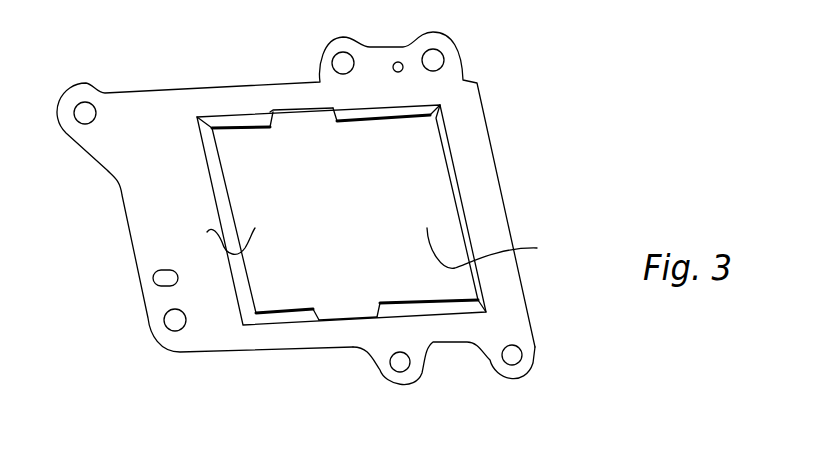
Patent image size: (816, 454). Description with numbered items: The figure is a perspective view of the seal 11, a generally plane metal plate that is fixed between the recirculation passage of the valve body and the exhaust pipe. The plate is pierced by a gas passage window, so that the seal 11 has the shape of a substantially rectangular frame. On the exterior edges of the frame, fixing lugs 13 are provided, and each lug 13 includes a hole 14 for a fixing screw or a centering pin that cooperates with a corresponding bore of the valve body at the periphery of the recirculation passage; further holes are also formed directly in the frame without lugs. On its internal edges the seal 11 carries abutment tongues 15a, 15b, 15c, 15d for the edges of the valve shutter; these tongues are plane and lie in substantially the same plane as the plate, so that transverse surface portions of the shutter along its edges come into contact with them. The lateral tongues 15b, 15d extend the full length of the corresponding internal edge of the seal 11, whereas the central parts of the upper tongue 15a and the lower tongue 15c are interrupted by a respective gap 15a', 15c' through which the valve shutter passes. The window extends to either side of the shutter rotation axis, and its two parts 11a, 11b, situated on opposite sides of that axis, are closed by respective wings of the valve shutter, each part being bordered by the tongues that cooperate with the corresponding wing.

The seal 11 is at (190, 288).
The part of the window 11a is at (208, 235).
The part of the window 11b is at (504, 248).
The fixing lug 13 is at (408, 382).
The hole 14 is at (422, 373).
The upper abutment tongue 15a is at (349, 79).
The gap 15a' is at (268, 67).
The lateral abutment tongue 15b is at (448, 157).
The lower abutment tongue 15c is at (387, 365).
The gap 15c' is at (345, 368).
The lateral abutment tongue 15d is at (222, 197).